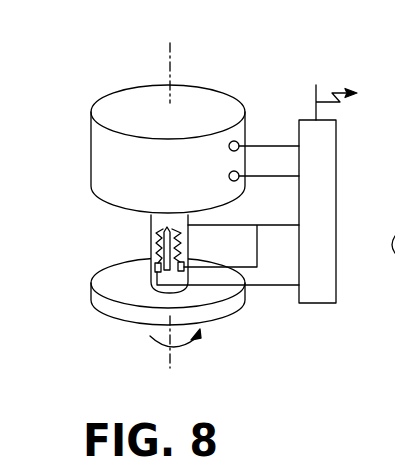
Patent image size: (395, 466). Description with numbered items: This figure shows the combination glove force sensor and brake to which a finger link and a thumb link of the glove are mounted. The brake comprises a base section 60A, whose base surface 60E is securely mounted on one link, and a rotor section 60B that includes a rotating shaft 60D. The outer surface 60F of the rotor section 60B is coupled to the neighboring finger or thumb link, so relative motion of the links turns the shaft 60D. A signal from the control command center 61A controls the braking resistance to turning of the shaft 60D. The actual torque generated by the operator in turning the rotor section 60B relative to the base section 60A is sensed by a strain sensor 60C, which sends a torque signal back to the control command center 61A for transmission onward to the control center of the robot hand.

The base section 60A is at (101, 151).
The rotor section 60B is at (100, 302).
The strain sensor 60C is at (156, 240).
The rotating shaft 60D is at (187, 242).
The base surface 60E is at (157, 93).
The outer surface 60F is at (217, 325).
The control command center 61A is at (317, 175).